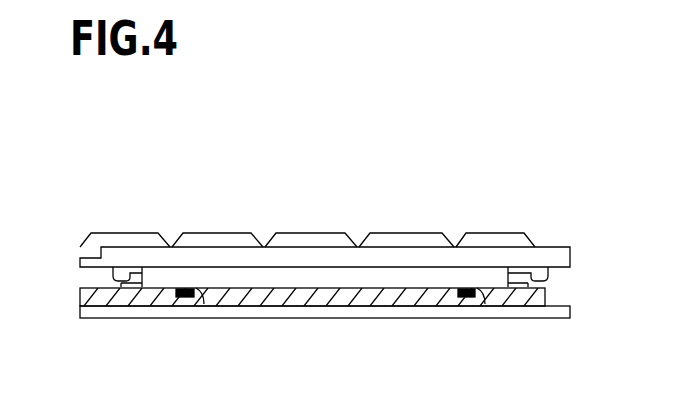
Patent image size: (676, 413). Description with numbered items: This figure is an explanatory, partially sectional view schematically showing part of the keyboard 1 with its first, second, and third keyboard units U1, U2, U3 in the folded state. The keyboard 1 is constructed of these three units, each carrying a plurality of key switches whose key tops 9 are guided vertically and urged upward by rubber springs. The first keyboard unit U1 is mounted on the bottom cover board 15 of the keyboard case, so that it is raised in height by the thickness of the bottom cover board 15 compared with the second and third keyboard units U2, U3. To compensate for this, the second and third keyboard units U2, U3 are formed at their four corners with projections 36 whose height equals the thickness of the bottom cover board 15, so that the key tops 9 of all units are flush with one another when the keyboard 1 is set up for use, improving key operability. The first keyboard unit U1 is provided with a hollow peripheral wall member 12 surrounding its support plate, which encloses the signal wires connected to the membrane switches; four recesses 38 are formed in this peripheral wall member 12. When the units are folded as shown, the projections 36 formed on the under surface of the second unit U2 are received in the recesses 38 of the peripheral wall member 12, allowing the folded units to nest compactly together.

The keyboard 1 is at (343, 197).
The key top 9 is at (497, 235).
The peripheral wall member 12 is at (310, 307).
The bottom cover board 15 is at (515, 320).
The projection 36 is at (113, 274).
The recess 38 is at (207, 293).
The first keyboard unit U1 is at (77, 303).
The second keyboard unit U2 is at (318, 281).
The third keyboard unit U3 is at (392, 230).